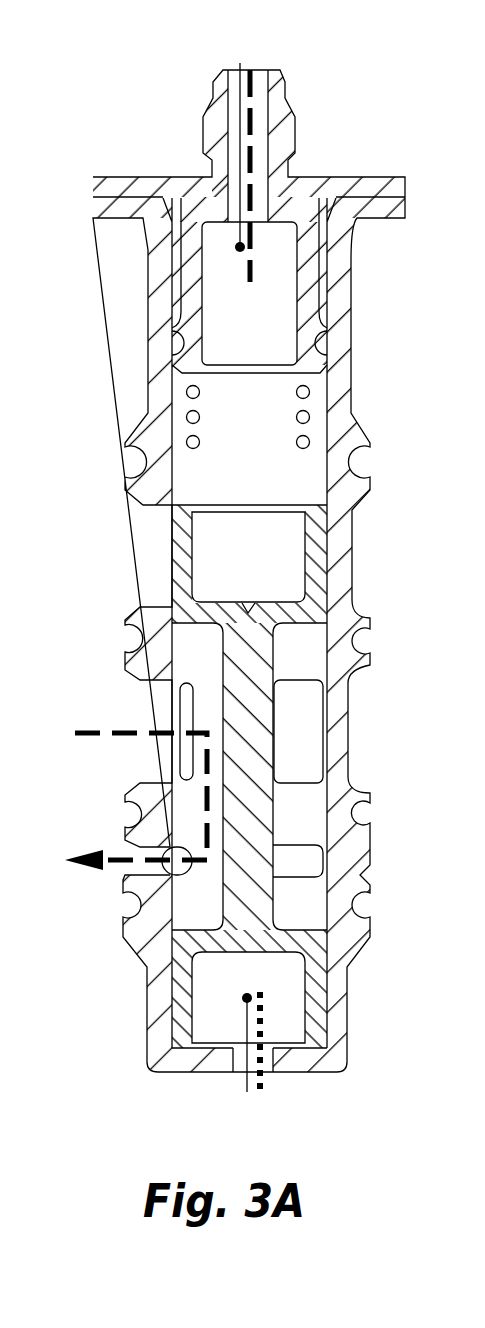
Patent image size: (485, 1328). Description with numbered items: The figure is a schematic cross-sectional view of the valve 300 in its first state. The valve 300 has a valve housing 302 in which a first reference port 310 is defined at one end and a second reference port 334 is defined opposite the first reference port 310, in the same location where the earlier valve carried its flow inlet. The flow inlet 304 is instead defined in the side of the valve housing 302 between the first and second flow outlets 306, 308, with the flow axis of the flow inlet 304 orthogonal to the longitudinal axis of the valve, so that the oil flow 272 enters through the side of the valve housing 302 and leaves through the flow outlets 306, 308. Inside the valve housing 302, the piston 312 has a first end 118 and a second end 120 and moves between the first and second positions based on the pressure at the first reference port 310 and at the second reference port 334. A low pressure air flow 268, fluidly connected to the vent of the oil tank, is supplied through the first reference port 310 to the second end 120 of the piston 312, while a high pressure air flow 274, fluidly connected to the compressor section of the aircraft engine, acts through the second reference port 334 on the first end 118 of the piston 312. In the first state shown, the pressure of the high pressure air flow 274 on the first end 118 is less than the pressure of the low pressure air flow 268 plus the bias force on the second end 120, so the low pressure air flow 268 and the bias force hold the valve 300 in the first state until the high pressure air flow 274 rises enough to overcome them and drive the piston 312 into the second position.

The valve 300 is at (96, 128).
The low pressure air flow 268 is at (256, 72).
The first reference port 310 is at (283, 238).
The second end of the piston 120 is at (318, 540).
The valve housing 302 is at (335, 583).
The second flow outlet 308 is at (130, 563).
The oil flow 272 is at (117, 728).
The flow inlet 304 is at (92, 762).
The first flow outlet 306 is at (114, 872).
The piston 312 is at (265, 803).
The first end of the piston 118 is at (180, 1013).
The second reference port 334 is at (292, 985).
The high pressure air flow 274 is at (263, 1063).